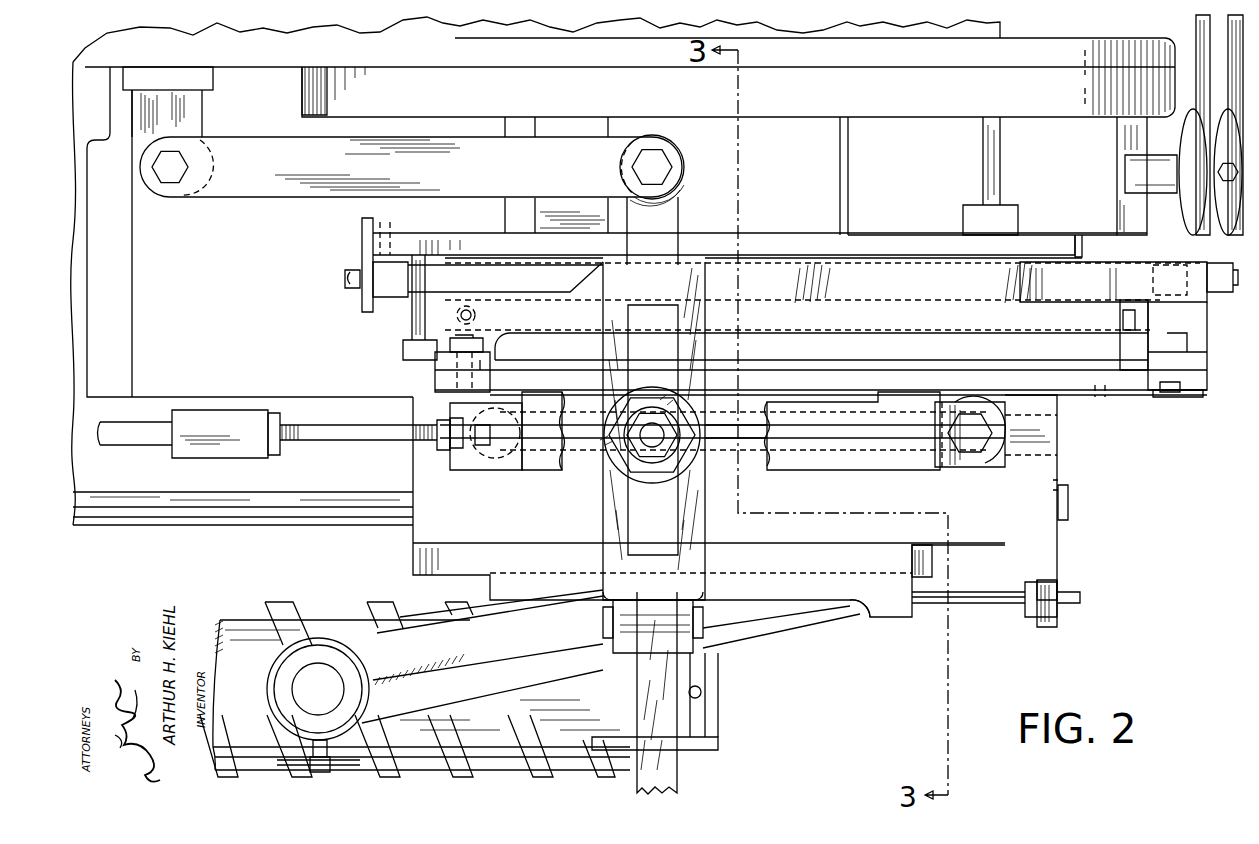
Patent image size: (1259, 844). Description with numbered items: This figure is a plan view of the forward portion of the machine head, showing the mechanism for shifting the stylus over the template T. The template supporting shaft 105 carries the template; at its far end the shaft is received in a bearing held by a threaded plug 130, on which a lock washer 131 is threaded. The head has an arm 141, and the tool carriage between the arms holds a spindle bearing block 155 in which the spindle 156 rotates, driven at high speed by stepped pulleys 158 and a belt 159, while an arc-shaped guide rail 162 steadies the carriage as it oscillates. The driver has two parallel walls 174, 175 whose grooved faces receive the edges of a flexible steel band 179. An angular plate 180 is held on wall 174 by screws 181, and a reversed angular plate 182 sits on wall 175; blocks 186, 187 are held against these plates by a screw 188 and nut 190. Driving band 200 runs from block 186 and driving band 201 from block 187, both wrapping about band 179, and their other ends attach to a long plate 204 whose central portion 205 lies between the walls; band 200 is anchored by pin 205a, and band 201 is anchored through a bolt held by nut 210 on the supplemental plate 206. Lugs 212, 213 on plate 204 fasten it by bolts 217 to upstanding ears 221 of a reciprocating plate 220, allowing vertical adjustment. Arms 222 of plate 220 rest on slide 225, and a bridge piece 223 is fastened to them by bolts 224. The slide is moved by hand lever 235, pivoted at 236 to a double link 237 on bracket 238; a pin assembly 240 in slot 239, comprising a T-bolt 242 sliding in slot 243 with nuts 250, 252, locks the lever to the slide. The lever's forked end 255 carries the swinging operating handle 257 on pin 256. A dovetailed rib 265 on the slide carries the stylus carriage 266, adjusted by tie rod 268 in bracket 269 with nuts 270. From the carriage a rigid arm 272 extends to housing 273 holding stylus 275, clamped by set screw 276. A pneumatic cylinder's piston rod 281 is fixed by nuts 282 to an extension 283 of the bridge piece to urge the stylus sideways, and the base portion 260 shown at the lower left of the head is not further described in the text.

The template supporting shaft 105 is at (213, 657).
The threaded plug 130 is at (719, 720).
The lock washer 131 is at (718, 746).
The arm 141 is at (286, 60).
The spindle bearing block 155 is at (1140, 140).
The spindle 156 is at (1160, 194).
The stepped pulleys 158 is at (1186, 226).
The belt 159 is at (1198, 30).
The arc-shaped guide rail 162 is at (430, 108).
The wall 174 is at (418, 352).
The wall 175 is at (456, 240).
The flexible steel band 179 is at (417, 322).
The angular plate 180 is at (1105, 392).
The screws 181 is at (388, 222).
The angular plate 182 is at (362, 293).
The block 186 is at (1093, 298).
The block 187 is at (392, 300).
The screw 188 is at (344, 278).
The nut 190 is at (350, 270).
The driving band 200 is at (540, 340).
The driving band 201 is at (520, 268).
The long plate 204 is at (869, 266).
The central portion 205 is at (806, 292).
The anchoring pin 205a is at (466, 306).
The supplemental plate 206 is at (1074, 258).
The nut 210 is at (1222, 265).
The upstanding lug 212 is at (482, 366).
The lug 213 is at (1200, 318).
The bolts 217 is at (478, 338).
The reciprocating plate 220 is at (880, 394).
The upstanding ears 221 is at (437, 380).
The arms 222 is at (980, 472).
The bridge piece 223 is at (545, 470).
The bolts 224 is at (975, 447).
The slide 225 is at (1060, 482).
The hand lever 235 is at (697, 511).
The pivot 236 is at (668, 163).
The double link 237 is at (453, 141).
The bracket 238 is at (196, 118).
The slot 239 is at (692, 336).
The pin assembly 240 is at (688, 412).
The T-bolt 242 is at (640, 442).
The longitudinal slot 243 is at (768, 440).
The nut 250 is at (685, 452).
The nut 252 is at (660, 472).
The forked end 255 is at (695, 606).
The pin 256 is at (705, 622).
The swinging operating handle 257 is at (677, 770).
The base 260 is at (255, 517).
The dovetailed rib 265 is at (932, 562).
The carriage 266 is at (892, 612).
The tie rod 268 is at (960, 606).
The bracket 269 is at (1057, 624).
The nuts 270 is at (1045, 583).
The rigid arm 272 is at (745, 645).
The housing 273 is at (350, 664).
The stylus 275 is at (314, 662).
The set screw 276 is at (328, 772).
The piston rod 281 is at (335, 441).
The nuts 282 is at (445, 455).
The extension 283 is at (470, 470).
The template T is at (473, 763).